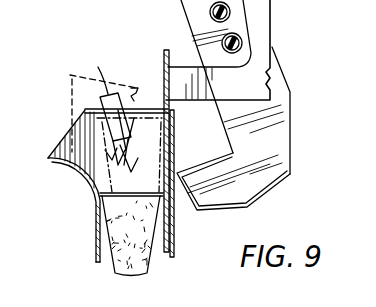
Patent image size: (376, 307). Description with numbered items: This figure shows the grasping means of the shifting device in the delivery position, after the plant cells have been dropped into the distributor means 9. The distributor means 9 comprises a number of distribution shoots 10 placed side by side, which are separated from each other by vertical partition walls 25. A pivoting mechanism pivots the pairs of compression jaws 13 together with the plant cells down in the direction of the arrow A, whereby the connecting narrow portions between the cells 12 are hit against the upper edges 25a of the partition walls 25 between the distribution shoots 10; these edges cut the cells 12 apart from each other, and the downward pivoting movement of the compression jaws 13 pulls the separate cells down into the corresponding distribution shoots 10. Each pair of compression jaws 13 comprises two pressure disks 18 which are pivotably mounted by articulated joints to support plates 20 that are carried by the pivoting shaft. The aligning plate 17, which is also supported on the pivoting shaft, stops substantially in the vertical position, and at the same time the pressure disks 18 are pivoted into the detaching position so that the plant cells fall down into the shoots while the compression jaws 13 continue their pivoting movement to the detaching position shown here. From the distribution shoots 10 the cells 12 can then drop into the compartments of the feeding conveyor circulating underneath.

The distributor means 9 is at (82, 180).
The distribution shoot 10 is at (107, 236).
The cell 12 is at (140, 229).
The compression jaw 13 is at (292, 109).
The aligning plate 17 is at (163, 68).
The pressure disk 18 is at (275, 145).
The support plate 20 is at (247, 53).
The partition wall 25 is at (85, 138).
The upper edge 25a is at (153, 110).
The arrow A is at (116, 120).